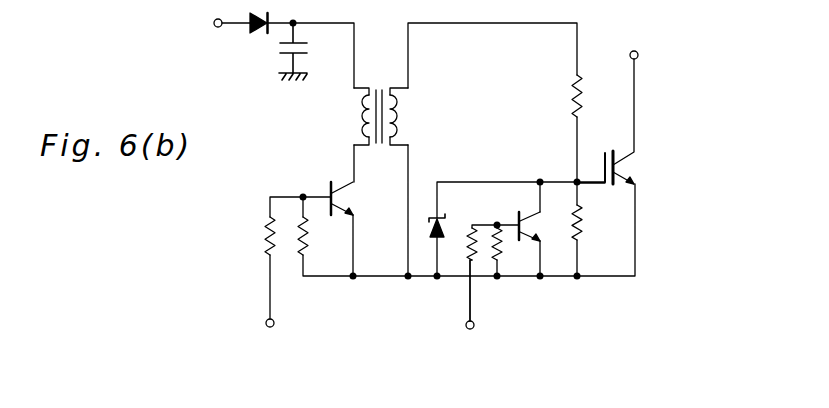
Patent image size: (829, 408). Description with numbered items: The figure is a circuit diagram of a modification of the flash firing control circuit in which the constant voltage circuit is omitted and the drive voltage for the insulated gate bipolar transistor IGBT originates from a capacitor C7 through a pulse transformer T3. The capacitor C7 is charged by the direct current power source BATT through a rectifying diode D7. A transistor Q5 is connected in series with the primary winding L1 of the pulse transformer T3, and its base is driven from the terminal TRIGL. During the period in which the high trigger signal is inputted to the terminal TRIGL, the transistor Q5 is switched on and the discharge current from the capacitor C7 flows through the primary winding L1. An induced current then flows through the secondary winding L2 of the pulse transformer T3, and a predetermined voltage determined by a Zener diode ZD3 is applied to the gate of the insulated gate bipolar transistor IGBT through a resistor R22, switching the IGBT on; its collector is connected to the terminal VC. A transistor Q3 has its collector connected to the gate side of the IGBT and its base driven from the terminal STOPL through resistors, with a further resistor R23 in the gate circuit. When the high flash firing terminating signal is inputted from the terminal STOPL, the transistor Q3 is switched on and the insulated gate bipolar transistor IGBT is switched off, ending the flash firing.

The direct current power source BATT is at (176, 21).
The rectifying diode D7 is at (253, 29).
The capacitor C7 is at (280, 56).
The pulse transformer T3 is at (379, 99).
The primary winding L1 is at (357, 113).
The secondary winding L2 is at (405, 116).
The transistor Q5 is at (363, 197).
The terminal TRIGL is at (268, 291).
The Zener diode ZD3 is at (445, 216).
The terminal STOPL is at (470, 297).
The transistor Q3 is at (548, 226).
The resistor R22 is at (572, 97).
The resistor R23 is at (583, 239).
The insulated gate bipolar transistor IGBT is at (658, 123).
The supply voltage terminal VC is at (637, 37).